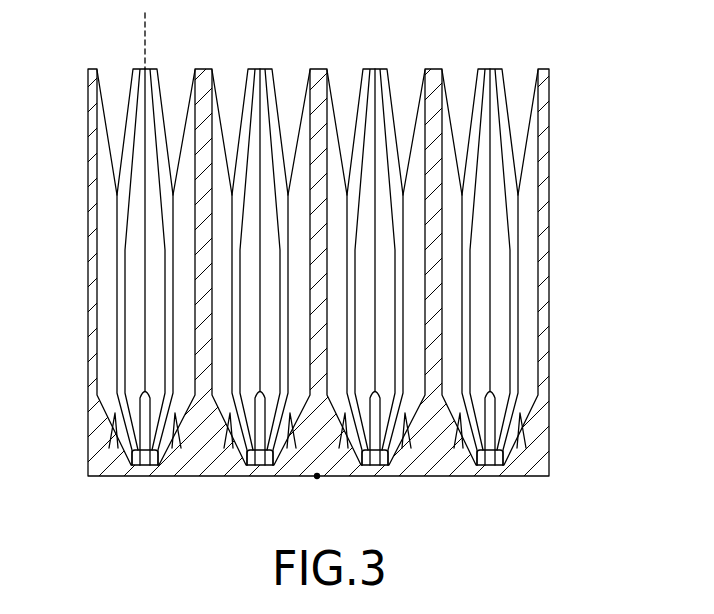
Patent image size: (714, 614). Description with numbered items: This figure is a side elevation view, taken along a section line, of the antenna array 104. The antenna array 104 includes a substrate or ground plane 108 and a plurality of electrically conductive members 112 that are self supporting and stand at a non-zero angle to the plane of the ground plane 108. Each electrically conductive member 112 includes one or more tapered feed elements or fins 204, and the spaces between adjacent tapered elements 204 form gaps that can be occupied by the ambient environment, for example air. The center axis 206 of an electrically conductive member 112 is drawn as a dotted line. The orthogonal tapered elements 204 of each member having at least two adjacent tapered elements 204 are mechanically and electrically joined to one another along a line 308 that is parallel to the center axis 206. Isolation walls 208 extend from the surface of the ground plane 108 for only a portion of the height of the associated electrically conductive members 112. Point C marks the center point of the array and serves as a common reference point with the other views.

The antenna array 104 is at (357, 267).
The ground plane 108 is at (538, 478).
The electrically conductive member 112 is at (137, 127).
The tapered element 204 is at (130, 88).
The center axis 206 is at (146, 40).
The isolation wall 208 is at (170, 443).
The line 308 is at (145, 315).
The center point C is at (317, 477).